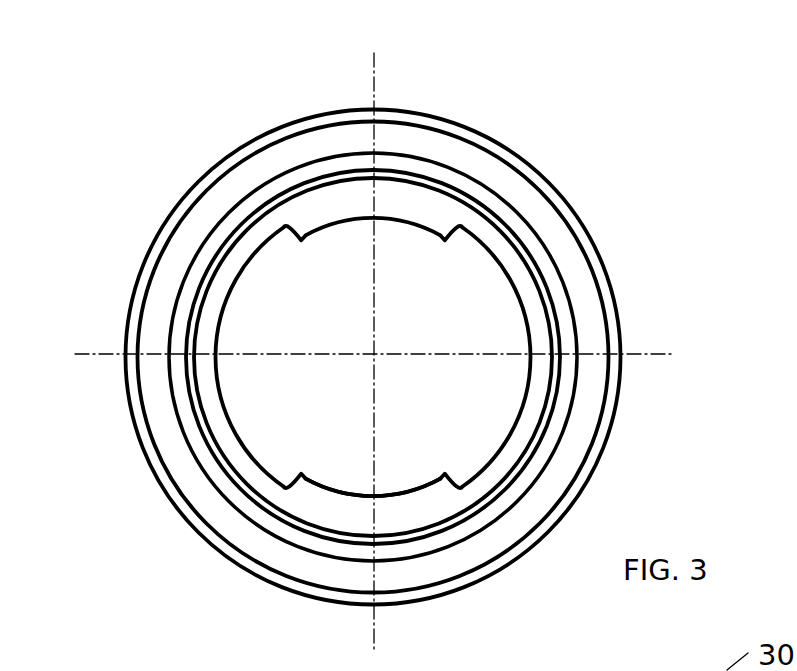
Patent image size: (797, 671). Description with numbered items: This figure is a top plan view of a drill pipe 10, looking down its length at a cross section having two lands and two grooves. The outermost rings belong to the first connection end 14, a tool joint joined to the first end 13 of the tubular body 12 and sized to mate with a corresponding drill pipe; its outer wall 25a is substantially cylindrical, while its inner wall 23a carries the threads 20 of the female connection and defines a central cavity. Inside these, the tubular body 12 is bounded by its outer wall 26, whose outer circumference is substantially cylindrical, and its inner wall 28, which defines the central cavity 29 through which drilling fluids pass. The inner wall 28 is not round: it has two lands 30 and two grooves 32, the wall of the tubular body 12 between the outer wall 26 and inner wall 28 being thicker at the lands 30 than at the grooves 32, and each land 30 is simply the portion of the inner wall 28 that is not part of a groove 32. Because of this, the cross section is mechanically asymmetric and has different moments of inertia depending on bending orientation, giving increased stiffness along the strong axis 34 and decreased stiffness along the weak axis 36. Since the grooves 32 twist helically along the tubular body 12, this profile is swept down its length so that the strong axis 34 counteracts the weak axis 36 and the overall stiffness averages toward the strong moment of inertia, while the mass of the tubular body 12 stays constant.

The drill pipe 10 is at (592, 73).
The tubular body 12 is at (323, 212).
The first end 13 is at (318, 565).
The first connection end 14 is at (200, 538).
The threads 20 is at (588, 268).
The inner wall 23a is at (190, 322).
The outer wall 25a is at (132, 428).
The outer wall 26 is at (450, 523).
The inner wall 28 is at (240, 279).
The central cavity 29 is at (468, 403).
The land 30 is at (433, 255).
The groove 32 is at (528, 390).
The strong axis 34 is at (374, 86).
The weak axis 36 is at (645, 354).